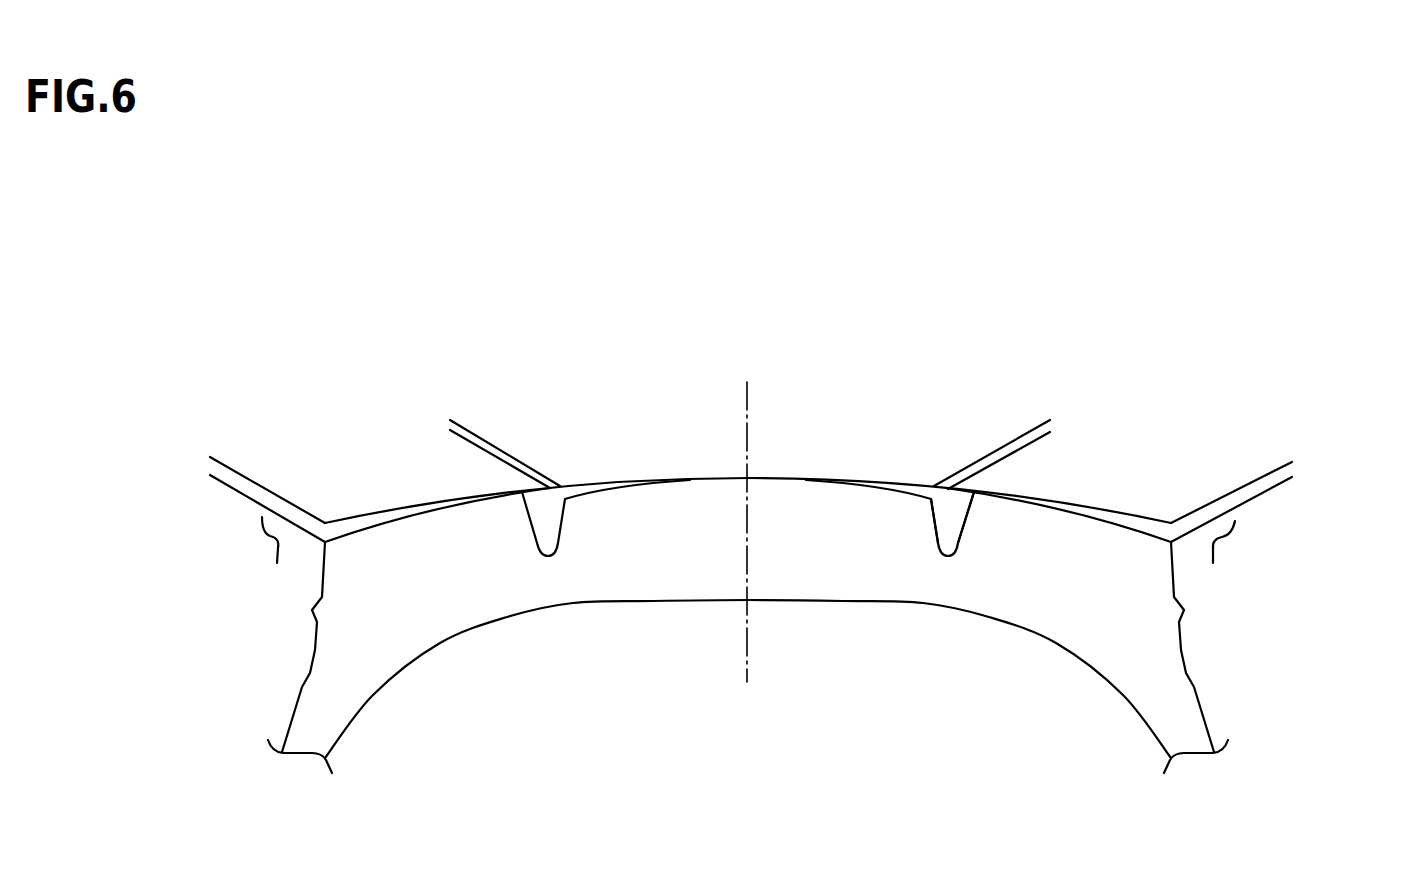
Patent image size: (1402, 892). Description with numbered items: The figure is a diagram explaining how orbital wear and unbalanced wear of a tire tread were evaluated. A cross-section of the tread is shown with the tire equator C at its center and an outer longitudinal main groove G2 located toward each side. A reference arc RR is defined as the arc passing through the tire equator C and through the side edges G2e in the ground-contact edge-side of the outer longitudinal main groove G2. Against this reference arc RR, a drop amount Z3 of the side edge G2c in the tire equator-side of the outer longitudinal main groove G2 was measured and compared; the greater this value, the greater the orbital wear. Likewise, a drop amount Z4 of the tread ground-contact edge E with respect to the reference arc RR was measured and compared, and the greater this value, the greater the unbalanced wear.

The tire equator C is at (748, 457).
The drop amount of the side edge Z3 is at (450, 476).
The drop amount of the tread ground-contact edge Z4 is at (210, 520).
The outer longitudinal main groove G2 is at (955, 542).
The side edge in the tire equator-side G2c is at (928, 500).
The side edge in the ground-contact edge-side G2e is at (975, 498).
The reference arc RR is at (1208, 548).
The tread ground-contact edge E is at (1175, 552).